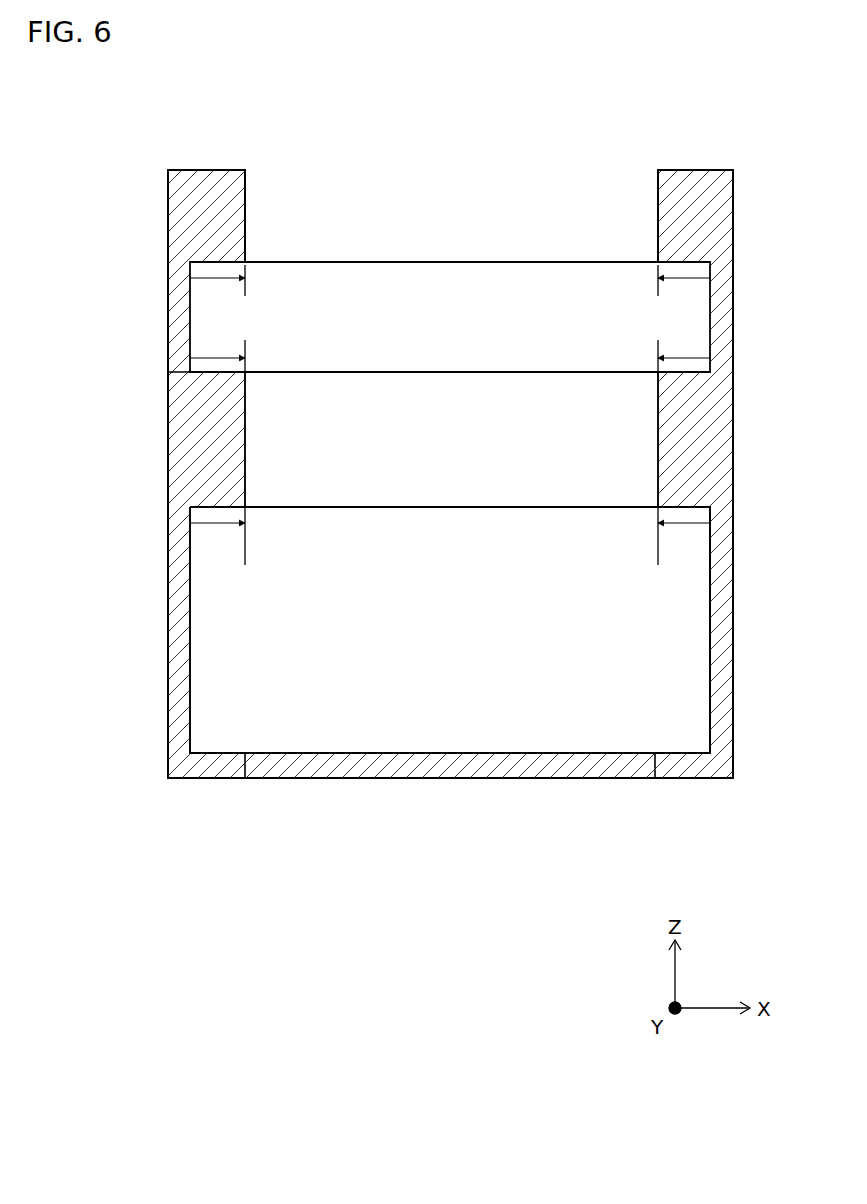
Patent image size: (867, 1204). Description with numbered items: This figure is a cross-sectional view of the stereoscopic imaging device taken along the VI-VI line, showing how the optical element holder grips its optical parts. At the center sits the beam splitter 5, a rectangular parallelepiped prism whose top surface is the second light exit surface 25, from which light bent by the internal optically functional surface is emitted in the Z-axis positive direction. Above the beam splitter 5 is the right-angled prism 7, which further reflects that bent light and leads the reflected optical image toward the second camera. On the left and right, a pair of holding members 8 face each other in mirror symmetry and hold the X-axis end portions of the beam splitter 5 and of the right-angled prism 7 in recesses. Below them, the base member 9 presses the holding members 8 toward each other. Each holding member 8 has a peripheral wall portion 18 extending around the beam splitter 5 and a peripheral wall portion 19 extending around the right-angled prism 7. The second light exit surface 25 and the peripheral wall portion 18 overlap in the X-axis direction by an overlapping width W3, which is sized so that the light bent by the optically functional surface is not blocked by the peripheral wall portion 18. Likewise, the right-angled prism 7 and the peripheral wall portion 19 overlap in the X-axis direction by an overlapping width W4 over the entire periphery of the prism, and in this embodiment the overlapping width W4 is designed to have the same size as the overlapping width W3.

The beam splitter 5 is at (494, 725).
The right-angled prism 7 is at (421, 282).
The holding members 8 is at (168, 758).
The base member 9 is at (371, 764).
The peripheral wall portion 18 is at (207, 491).
The peripheral wall portion 19 is at (207, 248).
The second light exit surface 25 is at (431, 503).
The overlapping width W3 is at (450, 536).
The overlapping width W4 is at (450, 318).